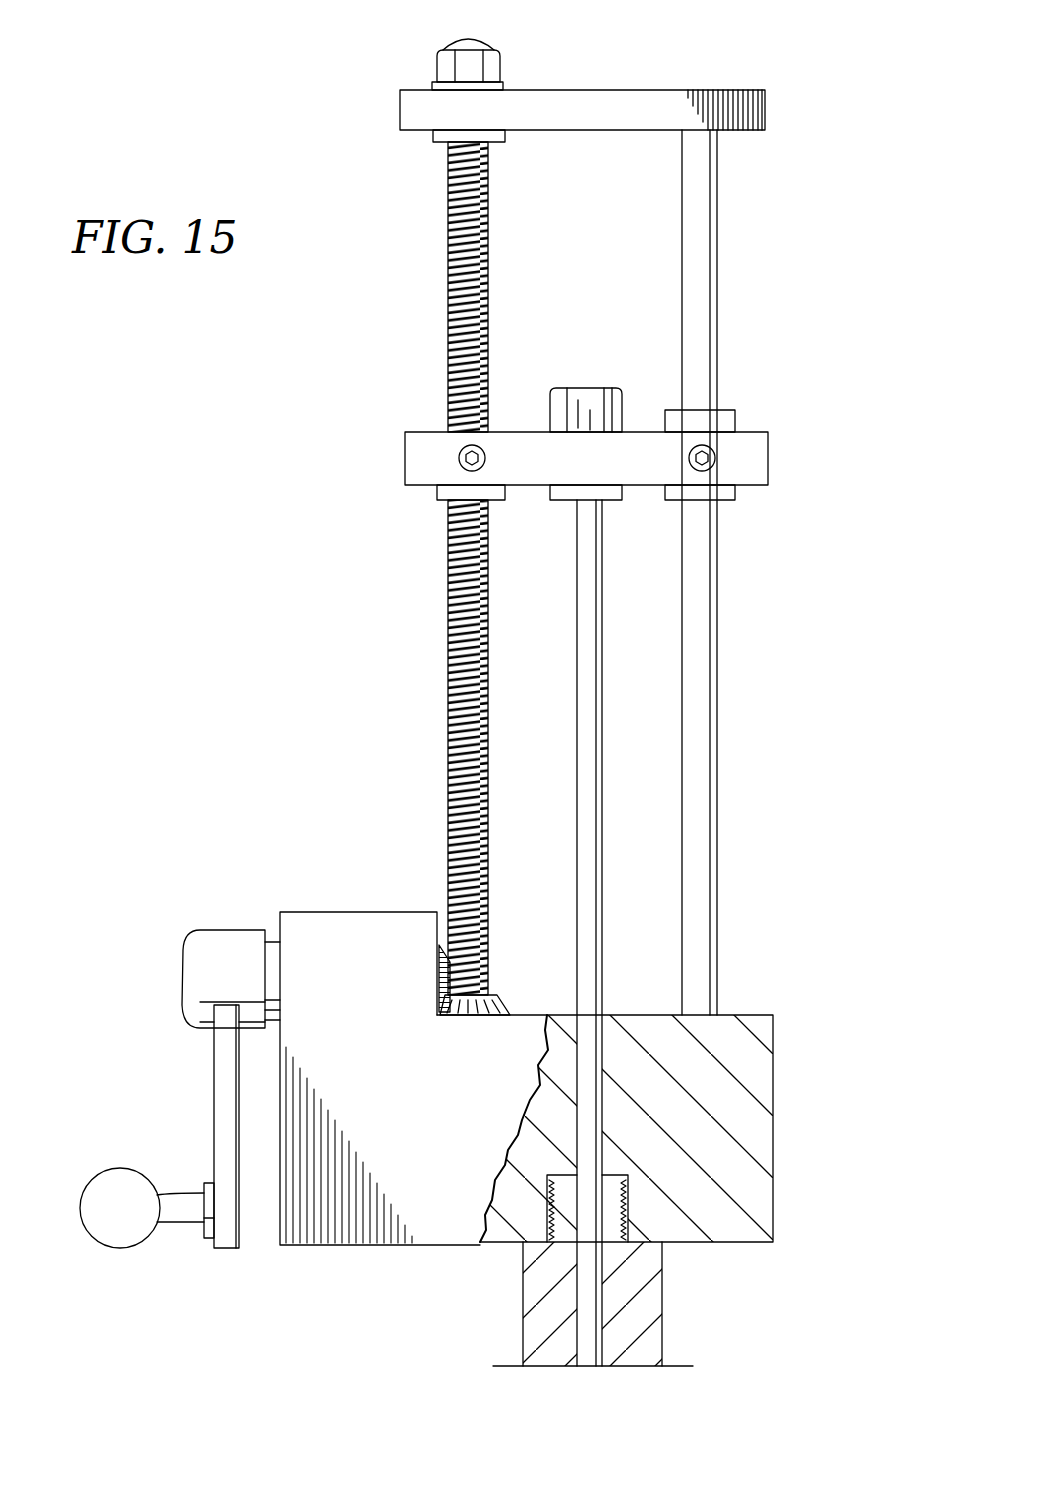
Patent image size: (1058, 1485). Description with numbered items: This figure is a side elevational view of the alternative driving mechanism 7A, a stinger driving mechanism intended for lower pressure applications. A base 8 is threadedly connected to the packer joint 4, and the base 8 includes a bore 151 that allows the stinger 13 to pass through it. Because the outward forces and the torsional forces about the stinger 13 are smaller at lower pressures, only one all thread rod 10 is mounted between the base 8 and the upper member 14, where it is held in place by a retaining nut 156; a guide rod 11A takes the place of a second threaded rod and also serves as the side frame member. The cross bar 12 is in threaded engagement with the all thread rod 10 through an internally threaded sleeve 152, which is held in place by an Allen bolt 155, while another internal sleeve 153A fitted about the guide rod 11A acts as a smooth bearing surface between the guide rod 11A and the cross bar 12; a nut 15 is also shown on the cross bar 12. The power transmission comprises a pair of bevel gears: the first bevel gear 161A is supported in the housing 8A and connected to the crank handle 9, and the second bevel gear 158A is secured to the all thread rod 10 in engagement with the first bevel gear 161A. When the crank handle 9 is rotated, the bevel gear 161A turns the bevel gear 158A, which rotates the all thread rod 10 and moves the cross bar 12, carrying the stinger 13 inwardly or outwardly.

The packer joint 4 is at (663, 1300).
The alternative driving mechanism 7A is at (755, 290).
The base 8 is at (775, 1055).
The housing 8A is at (290, 912).
The crank handle 9 is at (213, 1100).
The all thread rod 10 is at (490, 265).
The guide rod 11A is at (718, 215).
The cross bar 12 is at (435, 430).
The stinger 13 is at (602, 615).
The upper member 14 is at (592, 92).
The nut 15 is at (580, 402).
The bore 151 is at (585, 1250).
The internally threaded sleeve 152 is at (437, 492).
The internal sleeve 153A is at (740, 500).
The Allen bolt 155 is at (460, 458).
The retaining nut 156 is at (480, 42).
The second bevel gear 158A is at (475, 1020).
The first bevel gear 161A is at (540, 940).